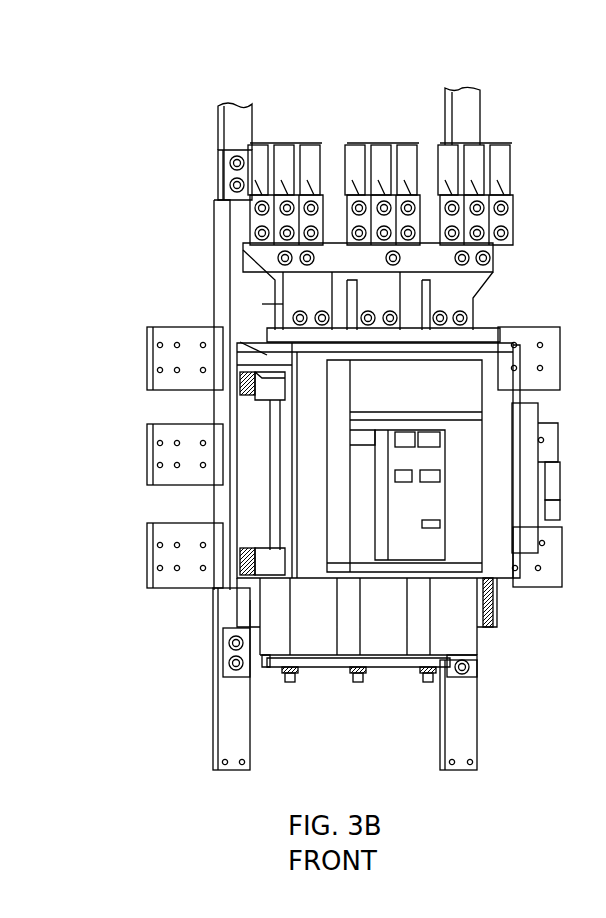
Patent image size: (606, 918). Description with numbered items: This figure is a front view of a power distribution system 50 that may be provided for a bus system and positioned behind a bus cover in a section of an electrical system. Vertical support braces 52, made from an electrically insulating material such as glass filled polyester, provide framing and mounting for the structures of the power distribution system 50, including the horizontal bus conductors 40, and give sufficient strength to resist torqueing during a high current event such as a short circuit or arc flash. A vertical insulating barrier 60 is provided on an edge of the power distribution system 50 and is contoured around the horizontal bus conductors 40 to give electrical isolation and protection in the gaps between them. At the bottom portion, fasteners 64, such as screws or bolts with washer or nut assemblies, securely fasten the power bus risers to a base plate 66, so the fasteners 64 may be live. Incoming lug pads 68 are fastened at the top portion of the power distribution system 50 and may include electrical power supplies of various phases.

The power distribution system 50 is at (537, 122).
The horizontal bus conductors 40 is at (168, 347).
The vertical support braces 52 is at (246, 762).
The vertical insulating barrier 60 is at (238, 283).
The fasteners 64 is at (298, 681).
The base plate 66 is at (322, 662).
The incoming lug pads 68 is at (283, 134).